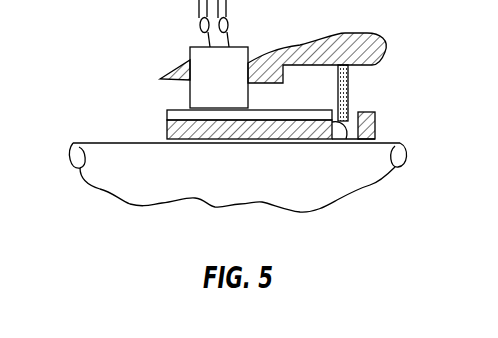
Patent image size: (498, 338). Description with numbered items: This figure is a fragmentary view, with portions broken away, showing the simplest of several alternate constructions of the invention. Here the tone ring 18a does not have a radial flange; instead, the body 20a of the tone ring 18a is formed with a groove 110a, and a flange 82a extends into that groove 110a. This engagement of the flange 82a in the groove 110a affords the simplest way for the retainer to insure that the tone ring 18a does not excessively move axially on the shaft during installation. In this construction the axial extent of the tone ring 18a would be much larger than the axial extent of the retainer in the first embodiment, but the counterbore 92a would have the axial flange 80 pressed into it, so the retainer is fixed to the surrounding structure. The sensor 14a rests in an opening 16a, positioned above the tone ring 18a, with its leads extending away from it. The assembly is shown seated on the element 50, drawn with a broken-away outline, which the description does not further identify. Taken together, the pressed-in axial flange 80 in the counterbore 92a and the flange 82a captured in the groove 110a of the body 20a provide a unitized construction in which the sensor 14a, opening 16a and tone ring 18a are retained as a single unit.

The sensor 14a is at (233, 53).
The opening 16a is at (185, 65).
The tone ring 18a is at (167, 140).
The body of the tone ring 20a is at (265, 130).
The substrate board 50 is at (160, 190).
The axial flange 80 is at (308, 65).
The flange 82a is at (349, 90).
The counterbore 92a is at (368, 66).
The groove 110a is at (347, 131).